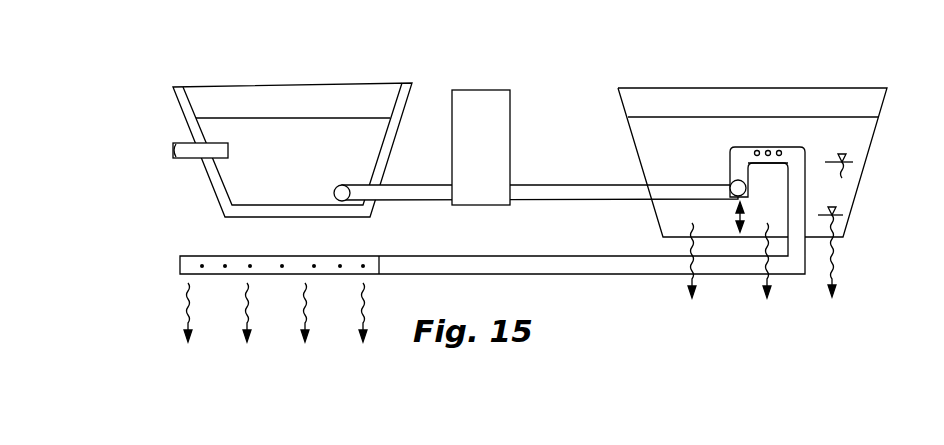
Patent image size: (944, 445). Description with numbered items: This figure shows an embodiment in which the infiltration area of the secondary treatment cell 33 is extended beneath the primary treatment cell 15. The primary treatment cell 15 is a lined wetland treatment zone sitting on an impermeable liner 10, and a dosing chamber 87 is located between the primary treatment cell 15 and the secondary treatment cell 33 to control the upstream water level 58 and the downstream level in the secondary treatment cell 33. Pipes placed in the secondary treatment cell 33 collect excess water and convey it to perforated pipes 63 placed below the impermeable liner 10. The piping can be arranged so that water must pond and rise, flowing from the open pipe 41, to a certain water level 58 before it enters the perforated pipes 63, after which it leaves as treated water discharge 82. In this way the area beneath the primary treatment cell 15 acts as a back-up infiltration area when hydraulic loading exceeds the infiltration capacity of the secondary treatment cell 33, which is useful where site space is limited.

The impermeable liner 10 is at (199, 178).
The primary treatment cell 15 is at (214, 100).
The dosing chamber 87 is at (477, 90).
The secondary treatment cell 33 is at (752, 149).
The perforated pipes 63 is at (766, 147).
The open pipe 41 is at (723, 217).
The water level 58 is at (852, 139).
The treated water discharge 82 is at (510, 284).